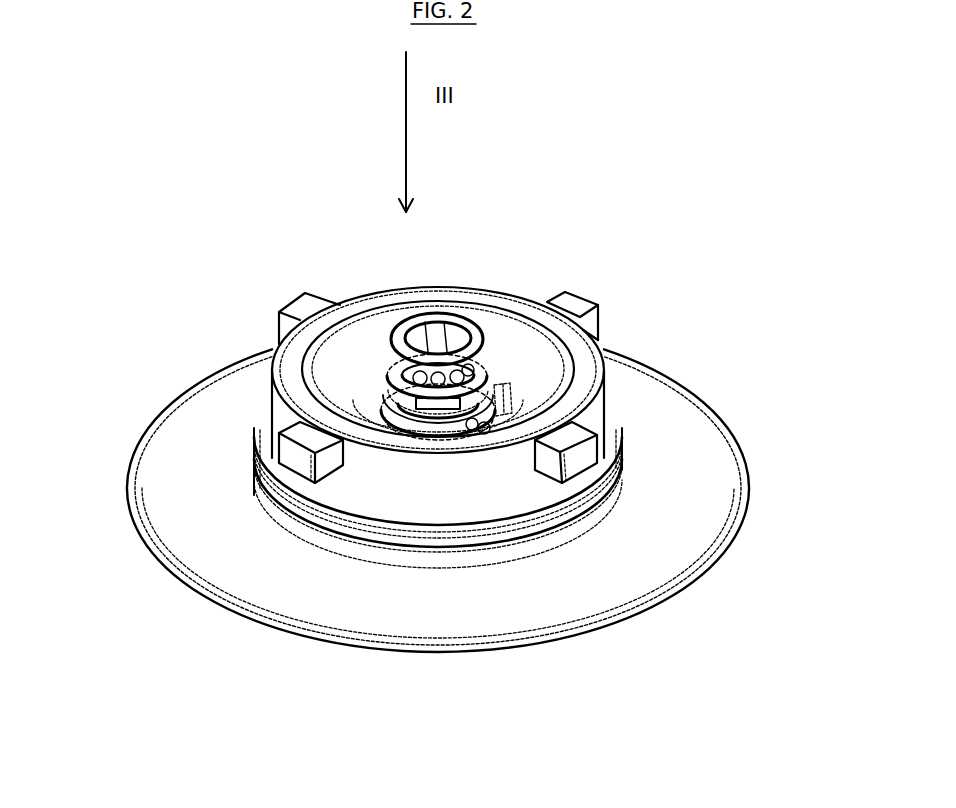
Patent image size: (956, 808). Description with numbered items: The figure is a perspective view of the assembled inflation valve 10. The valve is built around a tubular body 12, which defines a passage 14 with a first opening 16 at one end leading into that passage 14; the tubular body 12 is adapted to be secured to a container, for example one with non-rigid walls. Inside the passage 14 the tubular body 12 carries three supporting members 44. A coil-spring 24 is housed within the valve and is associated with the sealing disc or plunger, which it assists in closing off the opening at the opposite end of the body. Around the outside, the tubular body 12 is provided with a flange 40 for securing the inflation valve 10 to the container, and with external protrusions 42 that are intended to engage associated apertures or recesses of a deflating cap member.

The inflation valve 10 is at (188, 167).
The tubular body 12 is at (533, 488).
The passage 14 is at (345, 375).
The first opening 16 is at (377, 340).
The coil-spring 24 is at (477, 377).
The flange 40 is at (202, 520).
The external protrusions 42 is at (378, 509).
The supporting members 44 is at (505, 398).